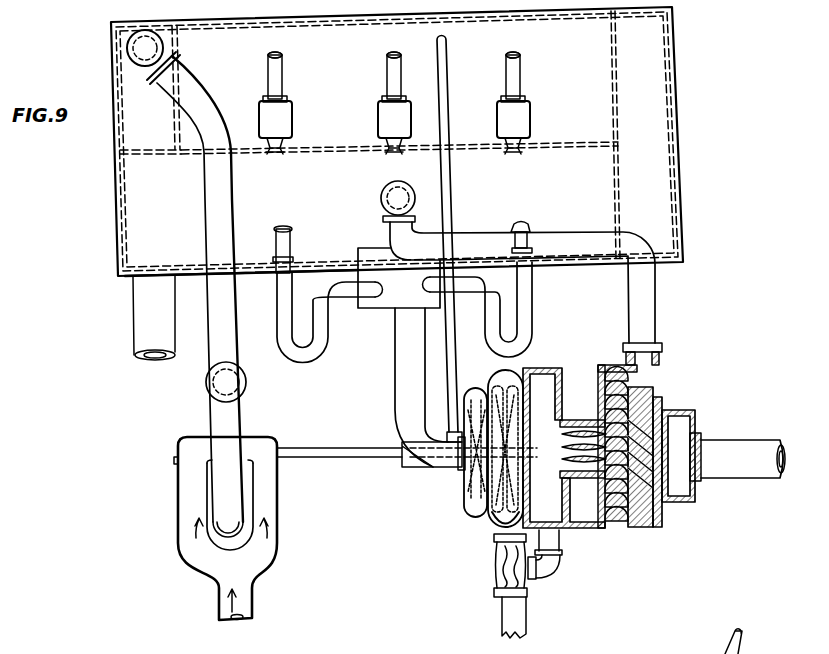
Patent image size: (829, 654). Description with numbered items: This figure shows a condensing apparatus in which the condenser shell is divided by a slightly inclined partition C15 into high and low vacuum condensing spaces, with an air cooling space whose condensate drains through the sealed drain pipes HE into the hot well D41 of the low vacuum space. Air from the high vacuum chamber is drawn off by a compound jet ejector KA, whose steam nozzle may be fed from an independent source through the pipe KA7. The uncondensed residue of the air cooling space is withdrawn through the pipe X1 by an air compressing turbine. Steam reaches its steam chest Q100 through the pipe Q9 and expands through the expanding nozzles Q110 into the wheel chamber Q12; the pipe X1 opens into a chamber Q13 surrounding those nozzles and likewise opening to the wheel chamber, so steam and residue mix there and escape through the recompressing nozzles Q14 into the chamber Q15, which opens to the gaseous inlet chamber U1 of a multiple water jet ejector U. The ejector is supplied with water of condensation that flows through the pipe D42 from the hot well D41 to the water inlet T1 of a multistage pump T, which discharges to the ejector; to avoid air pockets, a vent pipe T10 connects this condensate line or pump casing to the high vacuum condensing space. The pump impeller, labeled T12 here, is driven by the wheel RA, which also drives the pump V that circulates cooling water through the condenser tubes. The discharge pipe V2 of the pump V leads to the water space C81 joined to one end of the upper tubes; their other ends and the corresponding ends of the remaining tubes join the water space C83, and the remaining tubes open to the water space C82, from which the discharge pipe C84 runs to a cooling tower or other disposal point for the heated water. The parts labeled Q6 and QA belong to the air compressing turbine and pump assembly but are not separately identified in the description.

The water space C81 is at (123, 78).
The water space C82 is at (122, 185).
The water space C83 is at (655, 118).
The discharge pipe C84 is at (154, 320).
The partition C15 is at (467, 144).
The compound jet ejector KA is at (293, 117).
The pipe KA7 is at (386, 54).
The vent pipe T10 is at (444, 70).
The pipe X1 is at (567, 235).
The discharge pipe V2 is at (186, 283).
The pump V is at (184, 513).
The sealed drain pipes HE is at (279, 305).
The hot well D41 is at (377, 302).
The pipe D42 is at (394, 362).
The water inlet T1 is at (452, 468).
The multistage pump T is at (483, 516).
The turbine wheel T12 is at (479, 386).
The multiple water jet ejector U is at (497, 583).
The gaseous inlet chamber U1 is at (534, 578).
The pump outlet Q6 is at (549, 513).
The chamber Q15 is at (547, 380).
The recompressing nozzles Q14 is at (579, 419).
The wheel chamber Q12 is at (615, 364).
The chamber Q13 is at (652, 362).
The wheel RA is at (621, 530).
The casing wall QA is at (646, 525).
The expanding nozzles Q110 is at (664, 452).
The steam chest Q100 is at (683, 500).
The pipe Q9 is at (743, 459).